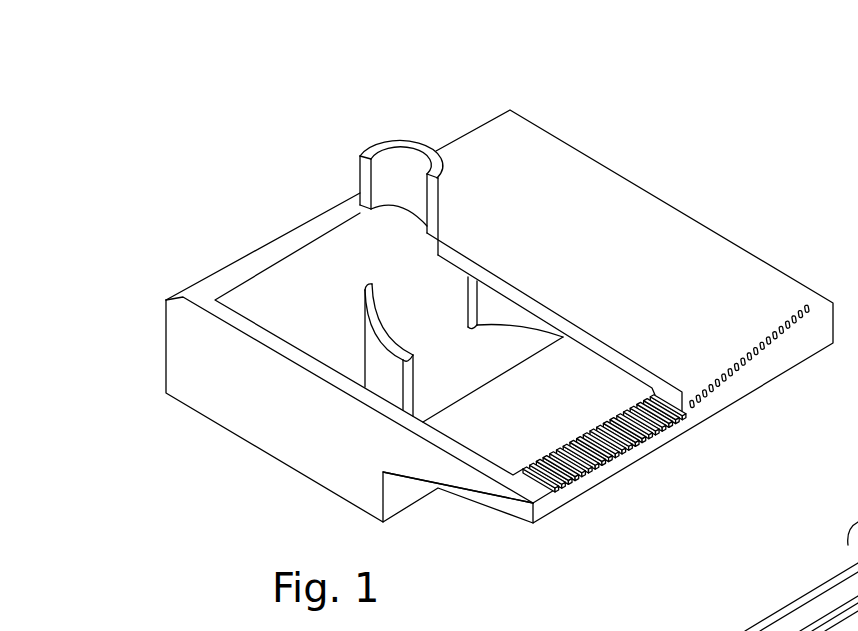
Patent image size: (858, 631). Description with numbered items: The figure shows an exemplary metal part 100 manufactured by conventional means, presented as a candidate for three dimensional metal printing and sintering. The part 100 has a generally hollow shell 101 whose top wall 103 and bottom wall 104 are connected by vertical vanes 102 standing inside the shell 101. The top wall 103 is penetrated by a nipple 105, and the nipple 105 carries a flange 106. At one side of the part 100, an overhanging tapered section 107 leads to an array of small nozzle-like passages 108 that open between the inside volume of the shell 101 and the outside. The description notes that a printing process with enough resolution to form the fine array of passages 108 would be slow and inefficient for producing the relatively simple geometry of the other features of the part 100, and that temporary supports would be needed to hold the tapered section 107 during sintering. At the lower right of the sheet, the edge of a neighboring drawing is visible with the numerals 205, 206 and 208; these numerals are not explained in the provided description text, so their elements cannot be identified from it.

In FIG. 1, the metal part 100 is at (570, 130).
In FIG. 1, the hollow shell 101 is at (292, 363).
In FIG. 1, the vertical vanes 102 is at (362, 305).
In FIG. 1, the top wall 103 is at (503, 260).
In FIG. 1, the bottom wall 104 is at (427, 293).
In FIG. 1, the nipple 105 is at (343, 178).
In FIG. 1, the flange 106 is at (360, 150).
In FIG. 1, the overhanging tapered section 107 is at (473, 502).
In FIG. 1, the nozzle-like passages 108 is at (672, 398).
In FIG. 2, the terminals 205 is at (853, 558).
In FIG. 2, the circuit board 206 is at (813, 590).
In FIG. 2, the positioning post 208 is at (853, 533).